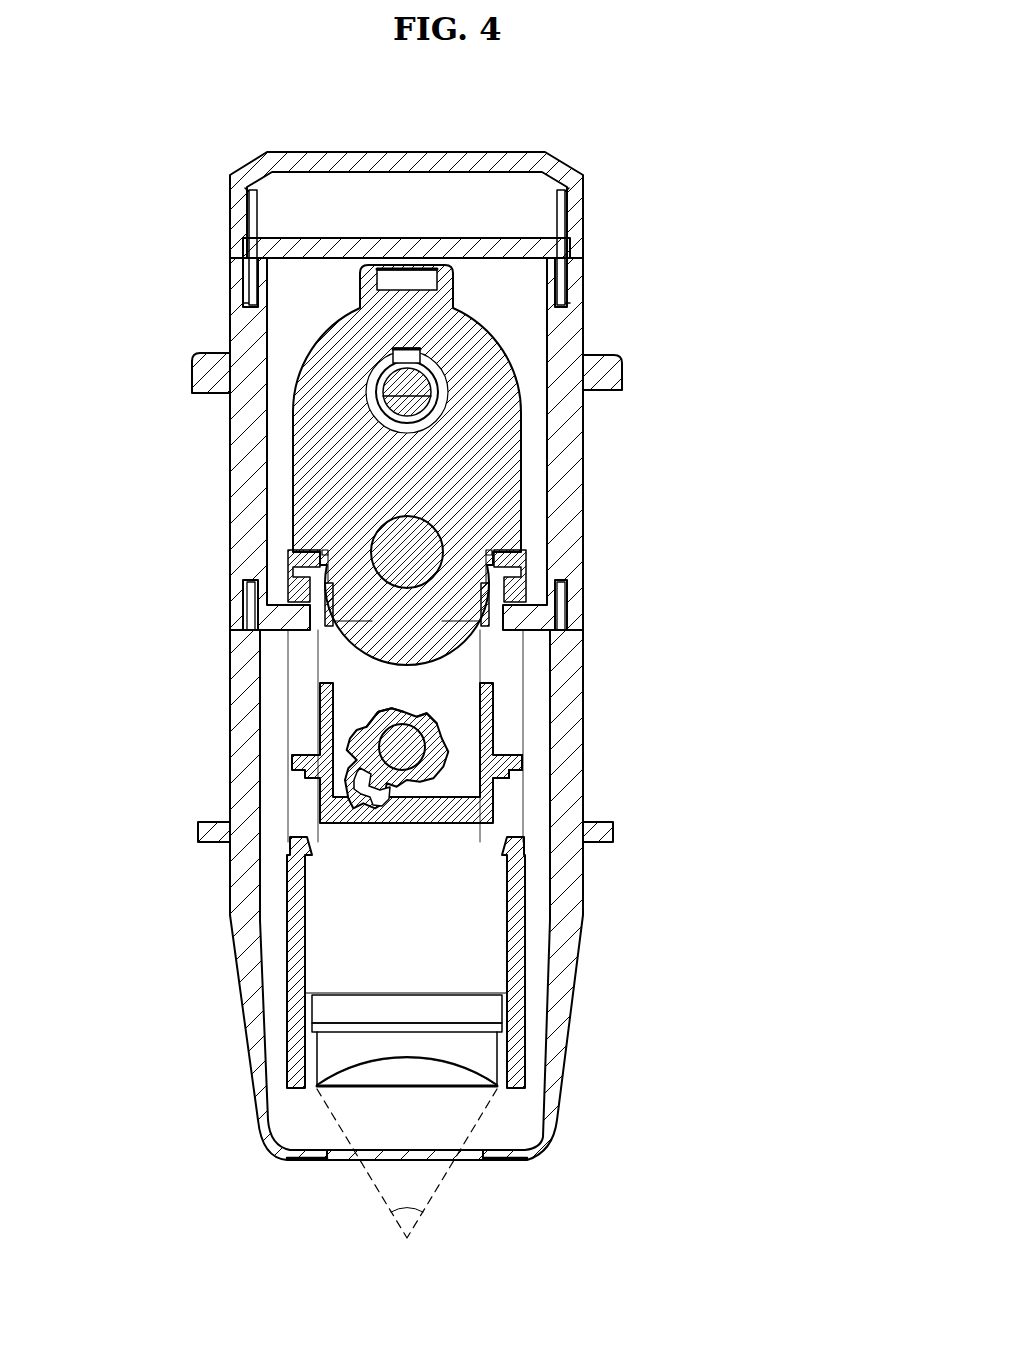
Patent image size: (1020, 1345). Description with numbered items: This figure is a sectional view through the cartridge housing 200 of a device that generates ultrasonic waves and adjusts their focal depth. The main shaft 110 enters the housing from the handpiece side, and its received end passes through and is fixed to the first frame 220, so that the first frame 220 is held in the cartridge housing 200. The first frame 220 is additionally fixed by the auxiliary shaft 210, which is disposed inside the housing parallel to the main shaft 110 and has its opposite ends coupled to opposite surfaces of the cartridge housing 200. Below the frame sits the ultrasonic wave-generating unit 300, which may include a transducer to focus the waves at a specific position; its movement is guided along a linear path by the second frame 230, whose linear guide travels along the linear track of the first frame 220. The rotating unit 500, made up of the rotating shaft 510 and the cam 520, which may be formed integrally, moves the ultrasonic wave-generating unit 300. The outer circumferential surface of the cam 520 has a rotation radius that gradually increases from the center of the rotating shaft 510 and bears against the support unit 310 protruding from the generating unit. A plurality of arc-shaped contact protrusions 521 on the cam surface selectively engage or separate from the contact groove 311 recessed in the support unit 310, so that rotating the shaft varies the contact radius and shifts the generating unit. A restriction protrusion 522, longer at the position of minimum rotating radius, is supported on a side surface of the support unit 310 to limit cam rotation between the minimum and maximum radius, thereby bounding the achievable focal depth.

The cartridge housing 200 is at (187, 197).
The main shaft 110 is at (425, 372).
The auxiliary shaft 210 is at (430, 515).
The first frame 220 is at (527, 702).
The second frame 230 is at (498, 737).
The ultrasonic wave-generating unit 300 is at (533, 1013).
The support unit 310 is at (497, 823).
The contact groove 311 is at (497, 783).
The rotating unit 500 is at (437, 901).
The rotating shaft 510 is at (375, 742).
The cam 520 is at (437, 724).
The contact protrusions 521 is at (420, 711).
The restriction protrusion 522 is at (355, 805).